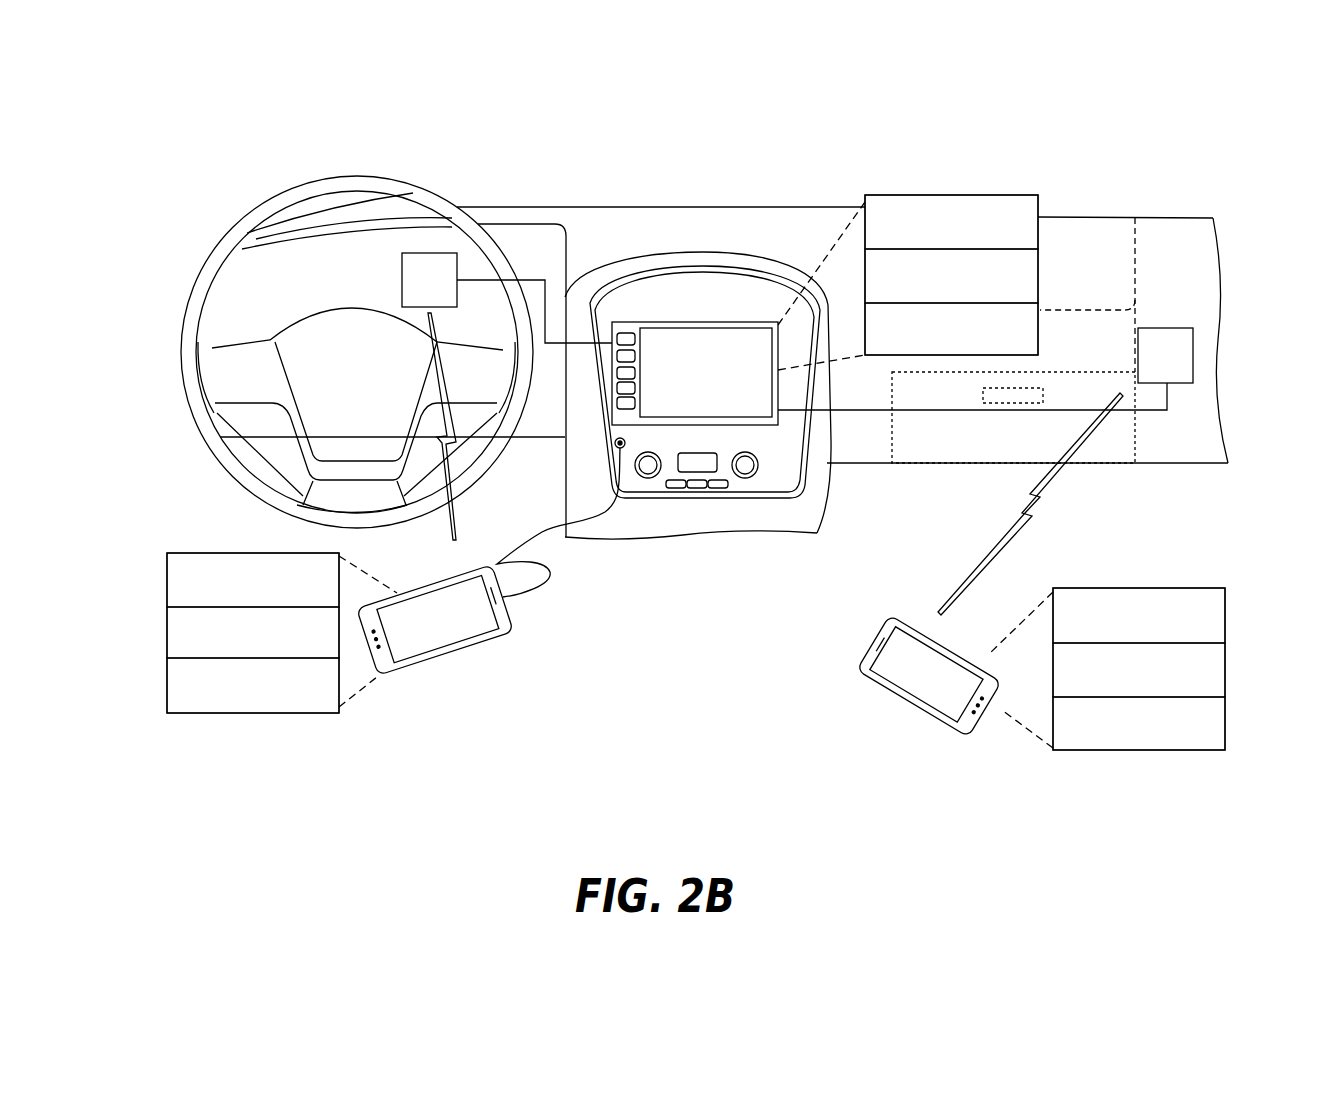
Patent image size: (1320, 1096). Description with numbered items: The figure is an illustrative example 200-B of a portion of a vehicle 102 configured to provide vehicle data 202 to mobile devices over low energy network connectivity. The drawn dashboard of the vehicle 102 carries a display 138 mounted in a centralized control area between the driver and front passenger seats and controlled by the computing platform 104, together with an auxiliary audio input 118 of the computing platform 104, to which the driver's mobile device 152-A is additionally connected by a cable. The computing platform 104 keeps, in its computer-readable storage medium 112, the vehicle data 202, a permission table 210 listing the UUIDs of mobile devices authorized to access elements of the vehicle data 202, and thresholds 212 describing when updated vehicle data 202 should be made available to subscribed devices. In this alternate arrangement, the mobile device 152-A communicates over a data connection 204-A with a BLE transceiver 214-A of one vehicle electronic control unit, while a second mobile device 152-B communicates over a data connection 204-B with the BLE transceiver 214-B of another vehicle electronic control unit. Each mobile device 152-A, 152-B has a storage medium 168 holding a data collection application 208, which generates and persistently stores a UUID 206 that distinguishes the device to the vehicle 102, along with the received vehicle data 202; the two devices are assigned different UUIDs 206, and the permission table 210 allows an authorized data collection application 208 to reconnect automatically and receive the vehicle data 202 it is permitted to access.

The illustrative example 200-B is at (226, 83).
The vehicle 102 is at (731, 207).
The computing platform 104 is at (741, 320).
The computer-readable storage medium 112 is at (1050, 262).
The auxiliary audio input 118 is at (630, 443).
The display 138 is at (670, 321).
The mobile device 152-A is at (470, 645).
The mobile device 152-B is at (897, 712).
The storage medium 168 is at (165, 593).
The vehicle data 202 is at (696, 472).
The data connection 204-A is at (465, 518).
The data connection 204-B is at (1057, 503).
The UUID 206 is at (696, 652).
The data collection application 208 is at (696, 598).
The permission table 210 is at (951, 276).
The thresholds 212 is at (951, 329).
The BLE transceiver 214-A is at (507, 298).
The BLE transceiver 214-B is at (985, 369).